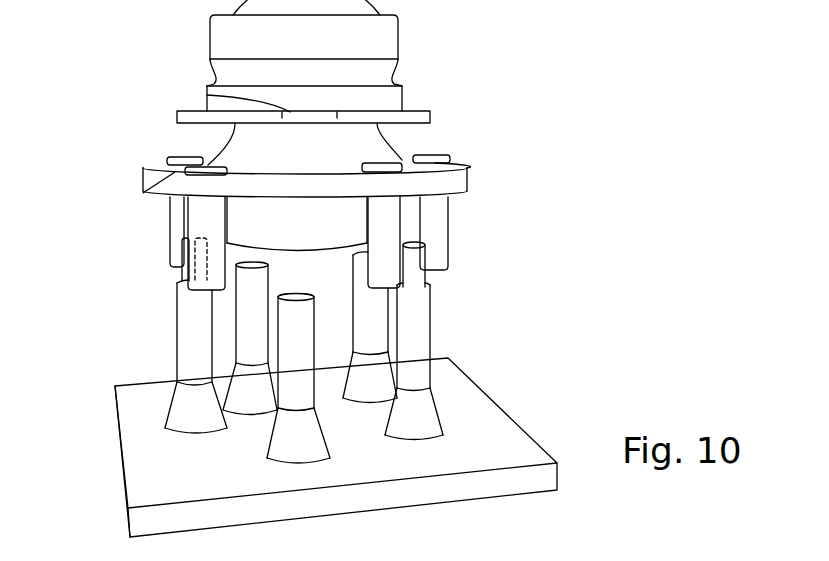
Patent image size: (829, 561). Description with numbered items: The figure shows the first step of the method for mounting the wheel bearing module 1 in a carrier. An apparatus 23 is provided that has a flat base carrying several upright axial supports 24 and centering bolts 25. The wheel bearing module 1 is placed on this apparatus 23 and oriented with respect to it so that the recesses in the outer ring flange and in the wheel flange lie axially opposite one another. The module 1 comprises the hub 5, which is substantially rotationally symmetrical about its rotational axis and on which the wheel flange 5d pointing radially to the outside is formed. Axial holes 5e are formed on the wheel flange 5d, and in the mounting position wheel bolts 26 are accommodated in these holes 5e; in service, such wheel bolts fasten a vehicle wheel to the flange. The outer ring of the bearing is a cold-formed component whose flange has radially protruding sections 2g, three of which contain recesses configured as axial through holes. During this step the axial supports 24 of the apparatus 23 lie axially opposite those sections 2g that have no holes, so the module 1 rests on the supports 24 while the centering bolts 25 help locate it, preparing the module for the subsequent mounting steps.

The wheel bearing module 1 is at (385, 102).
The radially protruding sections 2g is at (192, 118).
The hub 5 is at (240, 140).
The wheel flange 5d is at (143, 174).
The axial holes 5e is at (190, 190).
The wheel bolts 26 is at (178, 237).
The centering bolts 25 is at (177, 275).
The axial supports 24 is at (292, 360).
The apparatus 23 is at (487, 423).